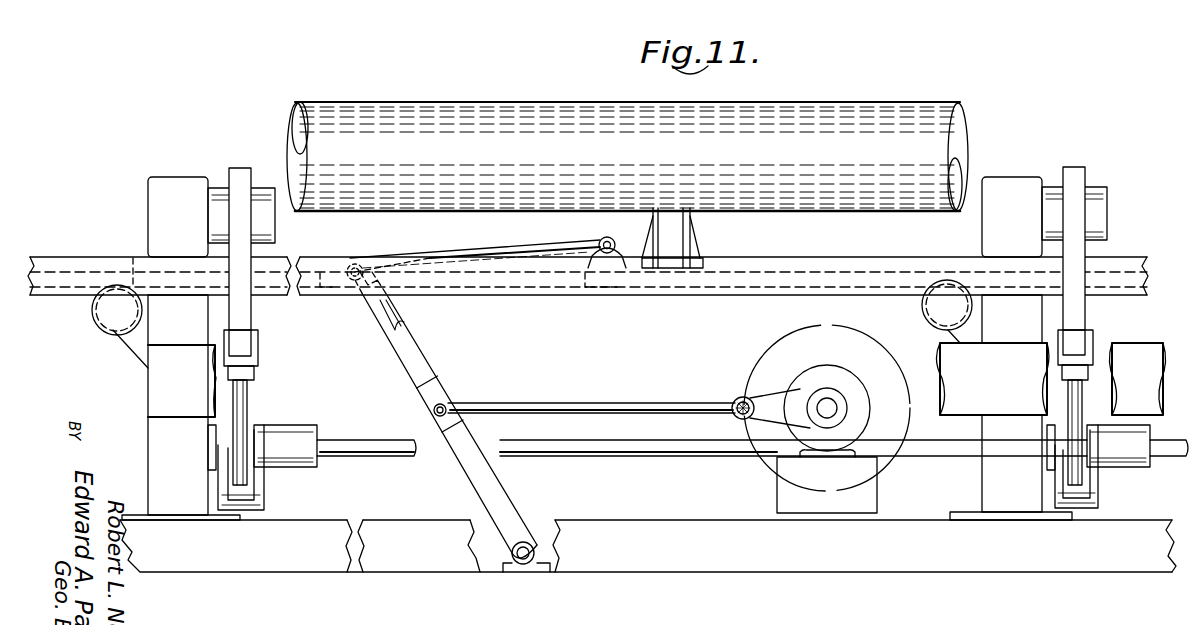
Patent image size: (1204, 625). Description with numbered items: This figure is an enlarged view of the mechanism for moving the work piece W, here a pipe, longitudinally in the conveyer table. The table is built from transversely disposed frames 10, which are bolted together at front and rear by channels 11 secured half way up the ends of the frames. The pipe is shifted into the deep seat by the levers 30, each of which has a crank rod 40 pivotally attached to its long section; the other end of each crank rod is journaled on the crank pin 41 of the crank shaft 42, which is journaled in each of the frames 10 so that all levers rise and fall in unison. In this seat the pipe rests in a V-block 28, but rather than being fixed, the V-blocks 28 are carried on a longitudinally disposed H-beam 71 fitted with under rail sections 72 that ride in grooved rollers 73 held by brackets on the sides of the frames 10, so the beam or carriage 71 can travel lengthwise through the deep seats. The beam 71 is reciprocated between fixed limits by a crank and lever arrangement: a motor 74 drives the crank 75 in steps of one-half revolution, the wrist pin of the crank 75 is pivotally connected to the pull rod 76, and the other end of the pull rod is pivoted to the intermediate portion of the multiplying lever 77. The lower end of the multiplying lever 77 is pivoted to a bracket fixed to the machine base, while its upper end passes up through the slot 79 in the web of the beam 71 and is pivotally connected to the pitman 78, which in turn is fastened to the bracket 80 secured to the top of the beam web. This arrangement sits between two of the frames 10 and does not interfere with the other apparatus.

The work piece W is at (541, 113).
The frame 10 is at (175, 187).
The channel 11 is at (1002, 387).
The V-block 28 is at (668, 226).
The lever 30 is at (264, 153).
The crank rod 40 is at (247, 408).
The crank pin 41 is at (264, 500).
The crank shaft 42 is at (351, 443).
The H-beam 71 is at (335, 297).
The under rail section 72 is at (134, 258).
The grooved roller 73 is at (112, 310).
The motor 74 is at (842, 384).
The crank 75 is at (770, 417).
The pull rod 76 is at (618, 404).
The multiplying lever 77 is at (430, 365).
The pitman 78 is at (532, 245).
The slot 79 is at (348, 264).
The bracket 80 is at (634, 262).